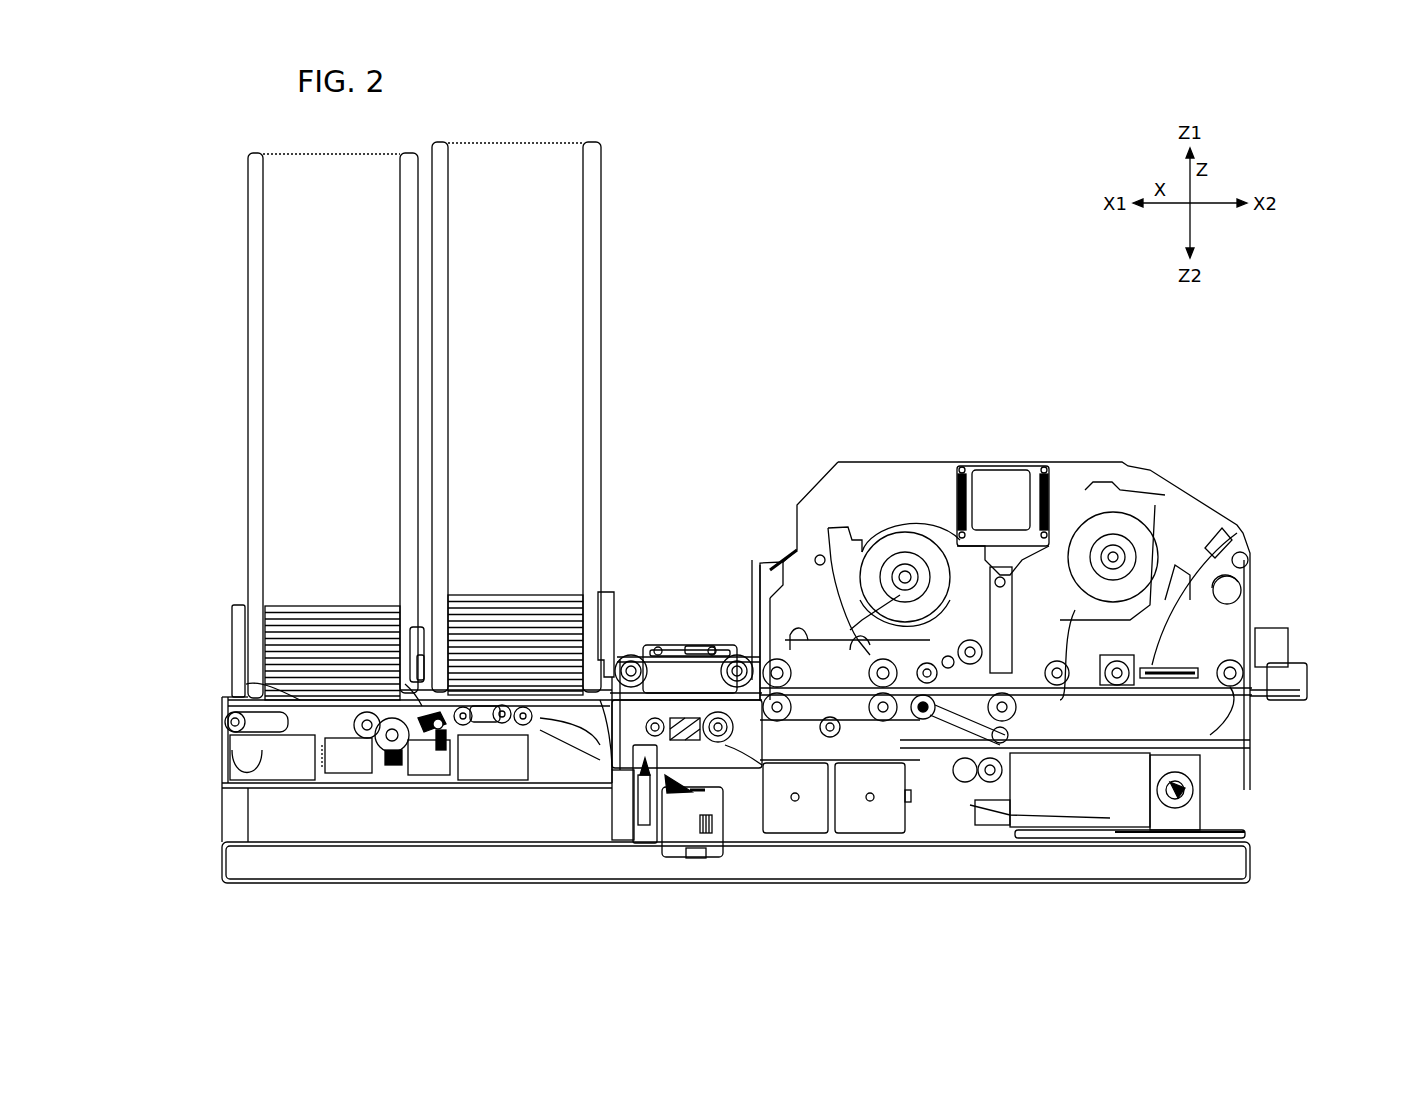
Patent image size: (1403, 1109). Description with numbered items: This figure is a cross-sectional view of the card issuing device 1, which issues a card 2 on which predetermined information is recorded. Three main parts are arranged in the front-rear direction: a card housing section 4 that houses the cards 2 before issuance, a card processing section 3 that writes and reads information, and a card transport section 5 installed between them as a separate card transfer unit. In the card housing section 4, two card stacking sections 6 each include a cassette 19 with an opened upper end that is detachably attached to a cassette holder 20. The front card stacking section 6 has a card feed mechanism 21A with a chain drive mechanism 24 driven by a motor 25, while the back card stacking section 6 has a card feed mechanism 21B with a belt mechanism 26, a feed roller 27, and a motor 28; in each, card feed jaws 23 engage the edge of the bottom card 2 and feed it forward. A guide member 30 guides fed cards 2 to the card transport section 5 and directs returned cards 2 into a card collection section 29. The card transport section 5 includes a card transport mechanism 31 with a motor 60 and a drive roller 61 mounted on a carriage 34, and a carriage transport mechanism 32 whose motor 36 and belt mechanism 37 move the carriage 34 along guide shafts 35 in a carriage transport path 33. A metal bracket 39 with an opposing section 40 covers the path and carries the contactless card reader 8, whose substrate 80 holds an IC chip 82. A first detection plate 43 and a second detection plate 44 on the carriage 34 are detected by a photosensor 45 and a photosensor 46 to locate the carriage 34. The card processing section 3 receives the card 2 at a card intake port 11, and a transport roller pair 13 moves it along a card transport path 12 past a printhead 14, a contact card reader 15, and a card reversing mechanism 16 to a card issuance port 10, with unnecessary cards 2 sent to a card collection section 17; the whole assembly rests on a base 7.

The card issuing device 1 is at (196, 201).
The card 2 is at (345, 607).
The card processing section 3 is at (962, 447).
The card housing section 4 is at (616, 289).
The card transport section 5 is at (710, 495).
The card stacking section 6 is at (457, 445).
The base 7 is at (1252, 866).
The contactless card reader 8 is at (703, 612).
The card issuance port 10 is at (1305, 690).
The card intake port 11 is at (746, 660).
The card transport path 12 is at (1198, 672).
The transport roller pair 13 is at (1050, 708).
The printhead 14 is at (1015, 665).
The contact card reader 15 is at (1237, 533).
The card reversing mechanism 16 is at (840, 665).
The card collection section 17 is at (1073, 787).
The cassette 19 is at (366, 153).
The cassette holder 20 is at (232, 617).
The card feed mechanism 21A is at (488, 765).
The card feed mechanism 21B is at (292, 760).
The card feed jaws 23 is at (405, 692).
The chain drive mechanism 24 is at (478, 742).
The motor 25 is at (346, 776).
The belt mechanism 26 is at (237, 731).
The feed roller 27 is at (440, 765).
The motor 28 is at (415, 777).
The card collection section 29 is at (571, 724).
The guide member 30 is at (546, 742).
The card transport mechanism 31 is at (683, 668).
The carriage transport mechanism 32 is at (700, 916).
The carriage transport path 33 is at (690, 860).
The carriage 34 is at (855, 772).
The guide shafts 35 is at (733, 762).
The motor 36 is at (690, 860).
The belt mechanism 37 is at (660, 860).
The bracket 39 is at (688, 635).
The opposing section 40 is at (718, 650).
The first detection plate 43 is at (622, 800).
The second detection plate 44 is at (830, 772).
The photosensor 45 is at (632, 763).
The photosensor 46 is at (790, 772).
The motor 60 is at (700, 793).
The drive roller 61 is at (660, 658).
The substrate 80 is at (696, 648).
The IC chip 82 is at (658, 646).